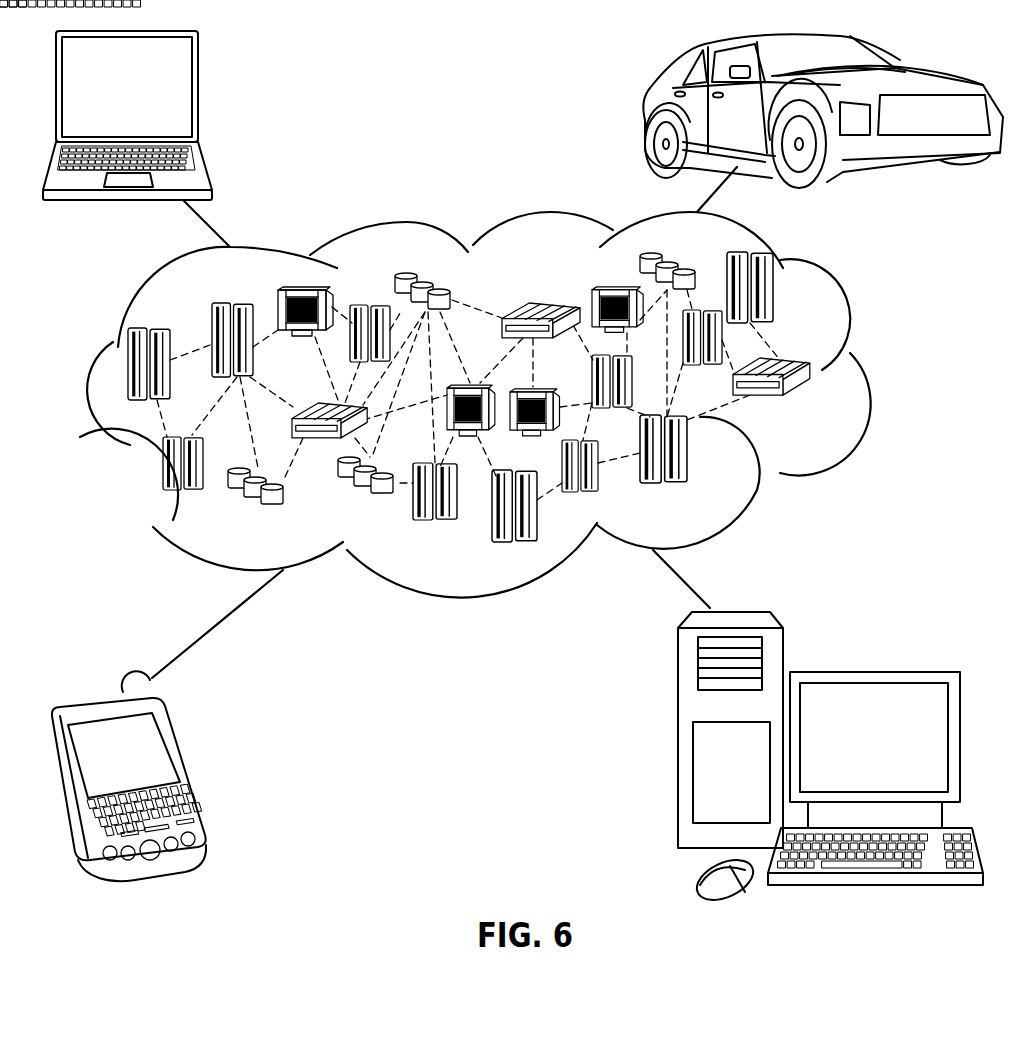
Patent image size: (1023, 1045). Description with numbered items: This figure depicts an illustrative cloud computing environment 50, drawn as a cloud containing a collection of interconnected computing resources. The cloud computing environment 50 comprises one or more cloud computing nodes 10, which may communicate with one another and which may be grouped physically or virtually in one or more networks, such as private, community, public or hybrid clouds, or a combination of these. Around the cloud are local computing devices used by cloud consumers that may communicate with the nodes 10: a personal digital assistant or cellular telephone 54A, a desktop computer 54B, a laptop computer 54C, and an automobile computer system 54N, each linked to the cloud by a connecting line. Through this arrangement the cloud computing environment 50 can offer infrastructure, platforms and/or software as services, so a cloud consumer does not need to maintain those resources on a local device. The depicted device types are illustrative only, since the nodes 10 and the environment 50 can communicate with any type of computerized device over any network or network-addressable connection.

The cloud computing nodes 10 is at (822, 410).
The cloud computing environment 50 is at (870, 373).
The personal digital assistant (PDA) or cellular telephone 54A is at (187, 768).
The desktop computer 54B is at (870, 672).
The laptop computer 54C is at (198, 93).
The automobile computer system 54N is at (650, 108).